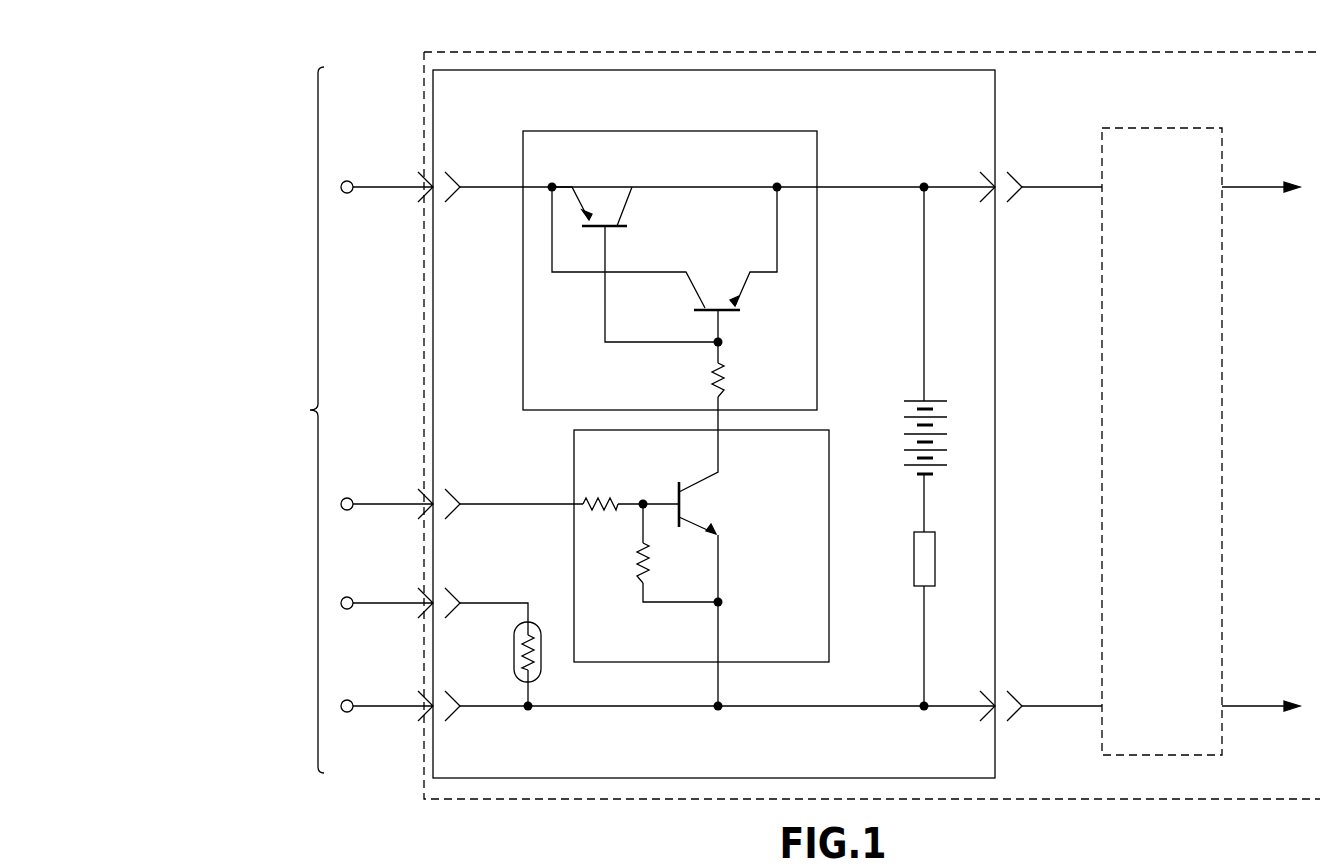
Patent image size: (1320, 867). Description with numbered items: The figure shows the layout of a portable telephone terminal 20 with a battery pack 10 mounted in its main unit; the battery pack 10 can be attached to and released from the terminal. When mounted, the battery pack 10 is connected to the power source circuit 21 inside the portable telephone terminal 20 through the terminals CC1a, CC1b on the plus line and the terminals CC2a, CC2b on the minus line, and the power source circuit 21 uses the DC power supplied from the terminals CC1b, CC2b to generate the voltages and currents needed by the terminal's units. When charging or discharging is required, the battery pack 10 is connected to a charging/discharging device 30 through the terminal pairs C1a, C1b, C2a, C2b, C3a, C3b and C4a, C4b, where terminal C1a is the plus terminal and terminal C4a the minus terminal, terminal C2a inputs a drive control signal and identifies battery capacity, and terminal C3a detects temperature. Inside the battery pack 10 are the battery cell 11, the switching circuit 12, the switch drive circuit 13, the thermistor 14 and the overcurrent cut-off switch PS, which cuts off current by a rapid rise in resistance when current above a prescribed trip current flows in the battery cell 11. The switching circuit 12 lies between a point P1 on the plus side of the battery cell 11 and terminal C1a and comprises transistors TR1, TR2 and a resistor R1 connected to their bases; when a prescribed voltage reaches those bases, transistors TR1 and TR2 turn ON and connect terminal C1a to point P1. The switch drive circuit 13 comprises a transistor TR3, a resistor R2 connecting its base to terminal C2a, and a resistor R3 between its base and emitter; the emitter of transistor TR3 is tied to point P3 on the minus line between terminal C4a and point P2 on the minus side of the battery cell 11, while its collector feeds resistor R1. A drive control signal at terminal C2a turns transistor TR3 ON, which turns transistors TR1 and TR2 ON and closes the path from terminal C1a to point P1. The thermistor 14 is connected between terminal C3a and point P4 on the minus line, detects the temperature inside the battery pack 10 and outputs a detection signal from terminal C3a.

The battery pack 10 is at (782, 70).
The battery cell 11 is at (947, 413).
The switching circuit 12 is at (817, 163).
The switch drive circuit 13 is at (829, 548).
The thermistor 14 is at (533, 623).
The portable telephone terminal 20 is at (1187, 52).
The power source circuit 21 is at (1222, 343).
The charging/discharging device 30 is at (234, 420).
The overcurrent cut-off switch PS is at (935, 562).
The point on the plus side of battery cell P1 is at (924, 185).
The point on the minus side of battery cell P2 is at (926, 708).
The point between terminal C4a and point P2 P3 is at (718, 708).
The point between terminal C4a and point P2 P4 is at (528, 708).
The transistor TR1 is at (630, 213).
The transistor TR2 is at (747, 298).
The transistor TR3 is at (715, 520).
The resistor R1 is at (727, 375).
The resistor R2 is at (597, 498).
The resistor R3 is at (642, 568).
The terminal C1a is at (452, 180).
The terminal C1b is at (372, 185).
The terminal C2a is at (452, 497).
The terminal C2b is at (372, 501).
The terminal C3a is at (452, 596).
The terminal C3b is at (372, 600).
The terminal C4a is at (452, 699).
The terminal C4b is at (372, 703).
The terminal CC1a is at (990, 168).
The terminal CC1b is at (1010, 200).
The terminal CC2a is at (992, 686).
The terminal CC2b is at (1010, 719).